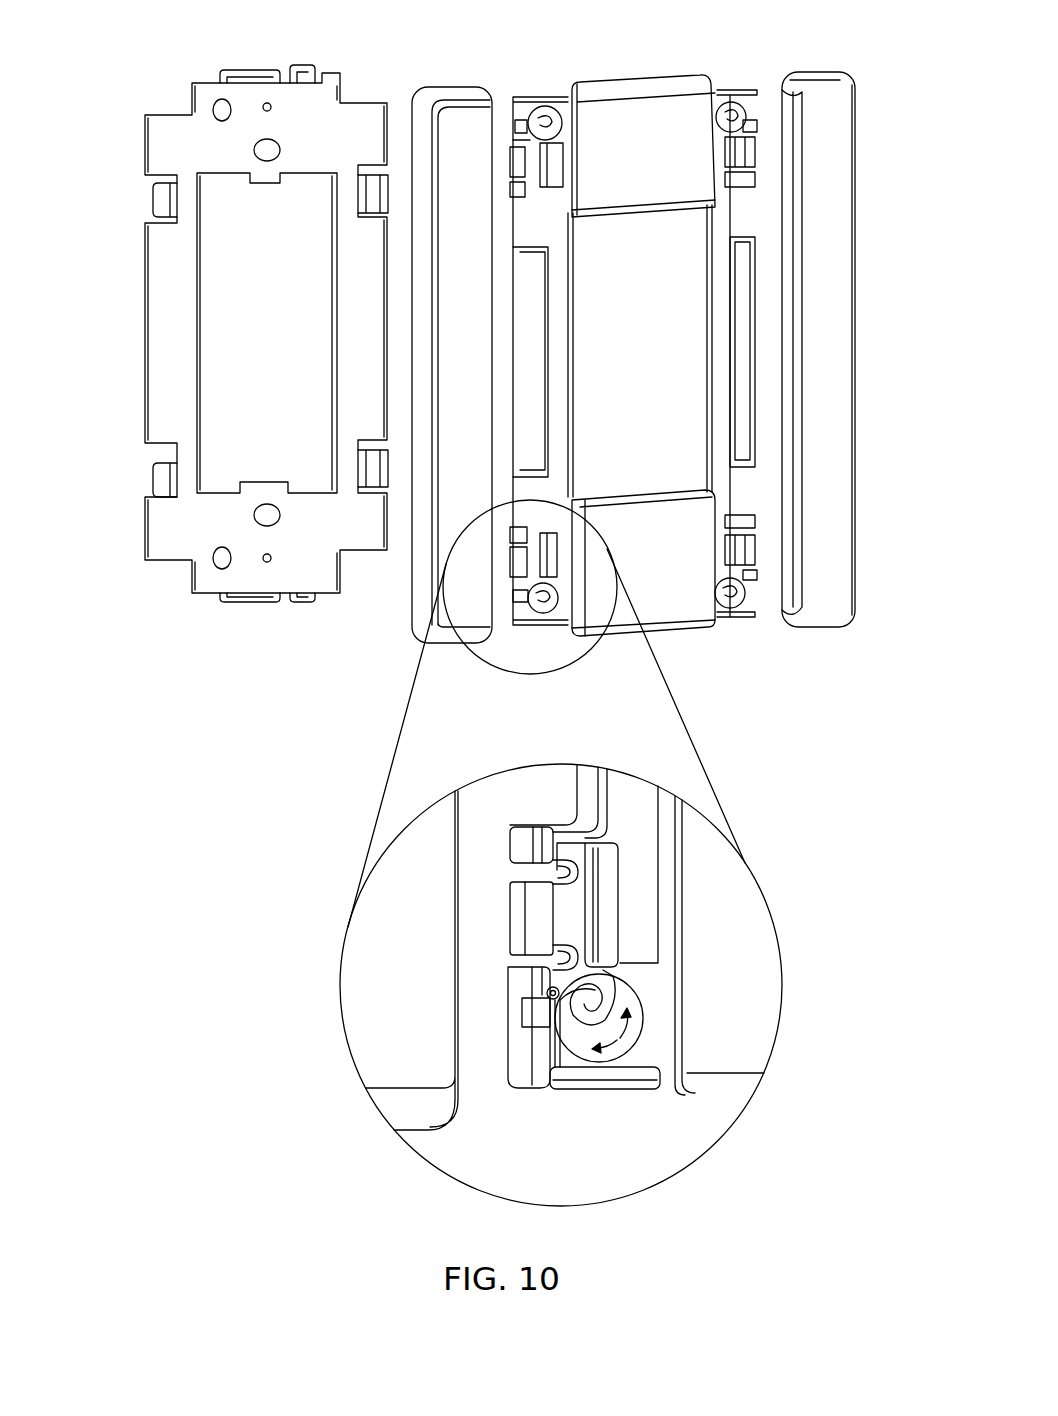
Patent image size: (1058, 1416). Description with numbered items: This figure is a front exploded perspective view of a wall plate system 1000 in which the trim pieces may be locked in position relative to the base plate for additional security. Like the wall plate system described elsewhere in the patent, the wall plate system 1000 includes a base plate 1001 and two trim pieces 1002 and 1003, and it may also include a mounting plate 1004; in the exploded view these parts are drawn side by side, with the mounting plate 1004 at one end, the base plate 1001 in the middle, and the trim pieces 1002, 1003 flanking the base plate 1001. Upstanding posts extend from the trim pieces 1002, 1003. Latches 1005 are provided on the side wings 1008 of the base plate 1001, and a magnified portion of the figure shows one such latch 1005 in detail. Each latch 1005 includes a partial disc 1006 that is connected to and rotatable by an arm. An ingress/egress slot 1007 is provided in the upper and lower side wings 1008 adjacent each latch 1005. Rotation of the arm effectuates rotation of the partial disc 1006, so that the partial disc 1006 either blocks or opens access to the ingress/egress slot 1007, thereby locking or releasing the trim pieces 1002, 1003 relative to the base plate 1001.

The wall plate system 1000 is at (126, 85).
The base plate 1001 is at (640, 88).
The trim piece 1002 is at (468, 100).
The trim piece 1003 is at (833, 80).
The mounting plate 1004 is at (162, 545).
The latch 1005 is at (535, 110).
The partial disc 1006 is at (625, 1003).
The ingress/egress slot 1007 is at (537, 1012).
The side wing 1008 is at (577, 808).